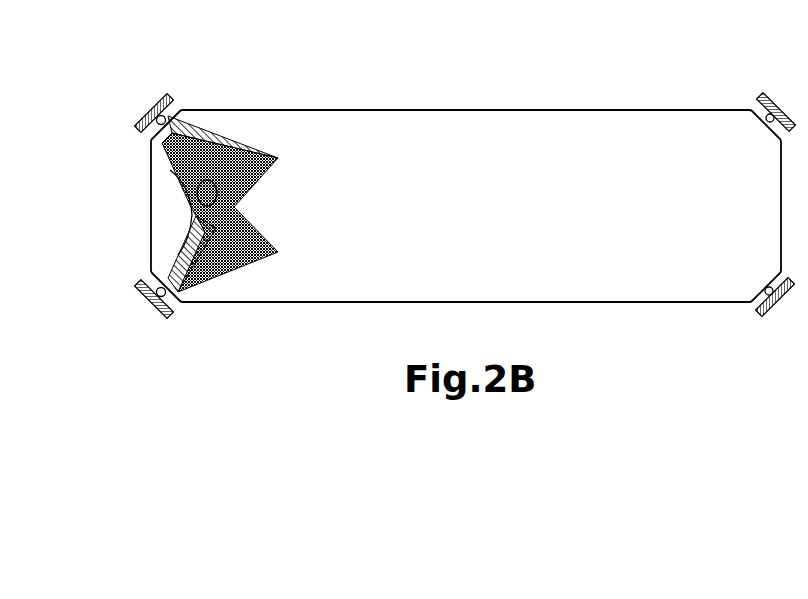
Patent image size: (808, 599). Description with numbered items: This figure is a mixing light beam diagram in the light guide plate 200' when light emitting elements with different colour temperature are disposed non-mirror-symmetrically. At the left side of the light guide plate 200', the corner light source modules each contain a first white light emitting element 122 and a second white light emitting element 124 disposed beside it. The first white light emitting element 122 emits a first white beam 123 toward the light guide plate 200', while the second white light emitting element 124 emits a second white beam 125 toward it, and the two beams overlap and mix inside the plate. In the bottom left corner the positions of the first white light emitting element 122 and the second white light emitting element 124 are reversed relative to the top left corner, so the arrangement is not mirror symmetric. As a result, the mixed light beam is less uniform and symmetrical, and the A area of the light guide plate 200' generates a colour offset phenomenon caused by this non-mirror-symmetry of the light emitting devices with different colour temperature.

The light guide plate 200' is at (466, 233).
The second white light emitting element 124 is at (176, 107).
The first white light emitting element 122 is at (150, 134).
The second white beam 125 is at (237, 142).
The first white beam 123 is at (180, 173).
The A area A is at (195, 197).